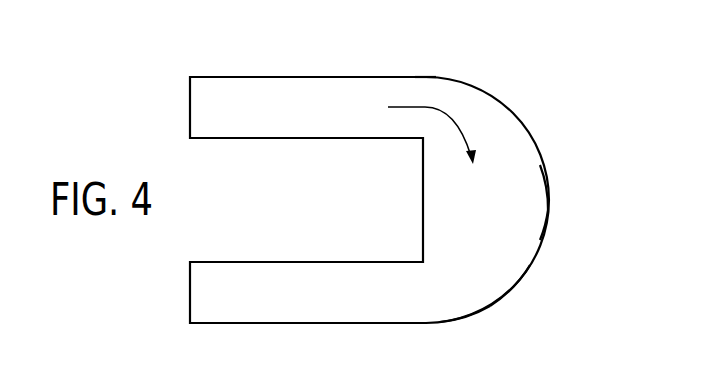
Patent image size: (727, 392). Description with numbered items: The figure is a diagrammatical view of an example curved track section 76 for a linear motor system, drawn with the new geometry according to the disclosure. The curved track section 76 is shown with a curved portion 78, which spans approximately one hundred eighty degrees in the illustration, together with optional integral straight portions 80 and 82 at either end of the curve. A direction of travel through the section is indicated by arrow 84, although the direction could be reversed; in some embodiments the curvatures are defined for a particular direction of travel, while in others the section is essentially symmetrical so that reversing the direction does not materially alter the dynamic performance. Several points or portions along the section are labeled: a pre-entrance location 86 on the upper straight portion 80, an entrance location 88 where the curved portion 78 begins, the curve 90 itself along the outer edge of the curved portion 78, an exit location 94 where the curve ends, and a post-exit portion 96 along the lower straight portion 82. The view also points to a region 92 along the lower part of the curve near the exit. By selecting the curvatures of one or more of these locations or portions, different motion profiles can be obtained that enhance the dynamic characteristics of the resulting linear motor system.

The curved track section 76 is at (470, 74).
The curved portion 78 is at (530, 230).
The integral straight portion 80 is at (295, 118).
The integral straight portion 82 is at (284, 304).
The arrow 84 is at (462, 129).
The pre-entrance location 86 is at (367, 85).
The entrance location 88 is at (418, 76).
The curve 90 is at (528, 194).
The lower curved portion 92 is at (503, 295).
The exit location 94 is at (458, 300).
The post-exit portion 96 is at (388, 305).